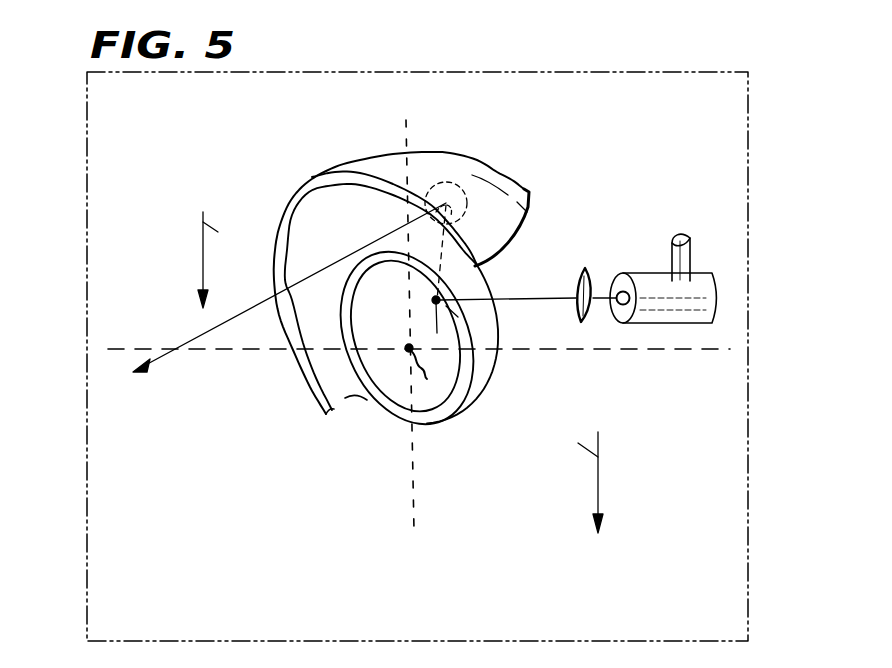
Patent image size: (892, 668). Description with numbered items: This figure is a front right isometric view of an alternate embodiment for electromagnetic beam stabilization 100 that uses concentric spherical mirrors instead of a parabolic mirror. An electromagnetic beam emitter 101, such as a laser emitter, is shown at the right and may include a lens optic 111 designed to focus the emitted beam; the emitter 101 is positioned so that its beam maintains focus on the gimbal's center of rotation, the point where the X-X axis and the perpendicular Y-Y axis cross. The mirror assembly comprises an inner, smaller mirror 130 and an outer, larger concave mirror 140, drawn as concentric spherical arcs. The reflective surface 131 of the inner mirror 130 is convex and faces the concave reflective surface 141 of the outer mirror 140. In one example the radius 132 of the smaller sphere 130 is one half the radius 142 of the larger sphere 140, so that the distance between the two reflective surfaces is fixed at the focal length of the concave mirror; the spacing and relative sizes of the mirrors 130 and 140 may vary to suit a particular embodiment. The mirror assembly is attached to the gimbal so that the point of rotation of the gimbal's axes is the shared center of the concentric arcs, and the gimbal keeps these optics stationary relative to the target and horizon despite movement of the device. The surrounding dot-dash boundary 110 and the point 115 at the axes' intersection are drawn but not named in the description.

The electromagnetic beam stabilization embodiment 100 is at (566, 52).
The housing 110 is at (87, 146).
The electromagnetic beam emitter 101 is at (653, 282).
The lens optic 111 is at (576, 269).
The center point 115 is at (407, 348).
The inner mirror 130 is at (491, 392).
The reflective surface of inner mirror 131 is at (503, 341).
The radius of smaller sphere 132 is at (375, 345).
The concave mirror 140 is at (371, 396).
The reflective surface of concave mirror 141 is at (458, 194).
The radius of larger sphere 142 is at (406, 348).